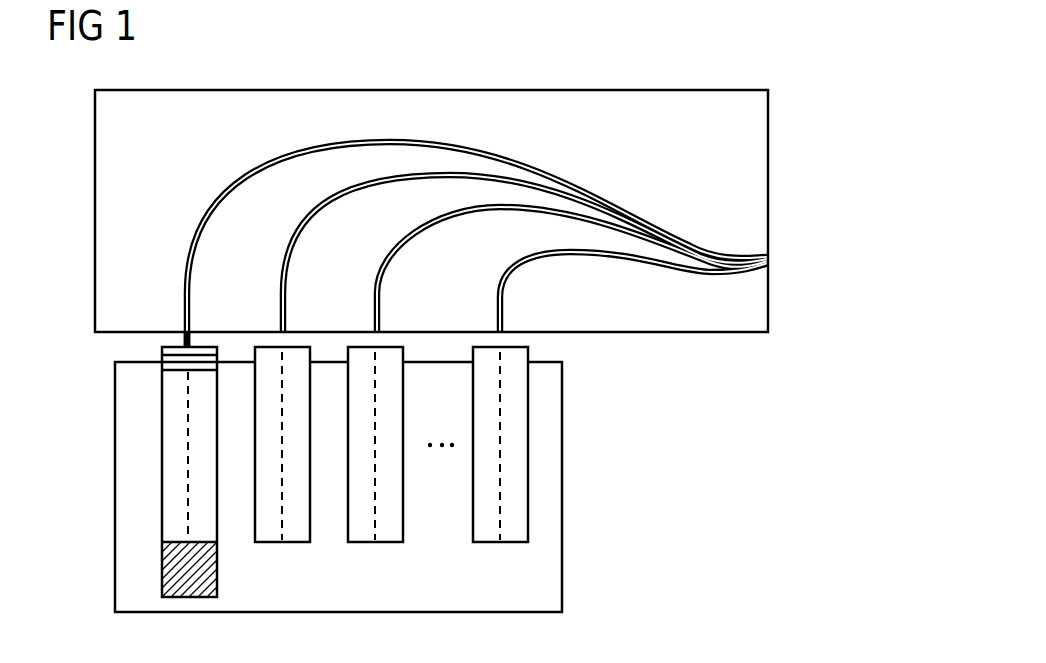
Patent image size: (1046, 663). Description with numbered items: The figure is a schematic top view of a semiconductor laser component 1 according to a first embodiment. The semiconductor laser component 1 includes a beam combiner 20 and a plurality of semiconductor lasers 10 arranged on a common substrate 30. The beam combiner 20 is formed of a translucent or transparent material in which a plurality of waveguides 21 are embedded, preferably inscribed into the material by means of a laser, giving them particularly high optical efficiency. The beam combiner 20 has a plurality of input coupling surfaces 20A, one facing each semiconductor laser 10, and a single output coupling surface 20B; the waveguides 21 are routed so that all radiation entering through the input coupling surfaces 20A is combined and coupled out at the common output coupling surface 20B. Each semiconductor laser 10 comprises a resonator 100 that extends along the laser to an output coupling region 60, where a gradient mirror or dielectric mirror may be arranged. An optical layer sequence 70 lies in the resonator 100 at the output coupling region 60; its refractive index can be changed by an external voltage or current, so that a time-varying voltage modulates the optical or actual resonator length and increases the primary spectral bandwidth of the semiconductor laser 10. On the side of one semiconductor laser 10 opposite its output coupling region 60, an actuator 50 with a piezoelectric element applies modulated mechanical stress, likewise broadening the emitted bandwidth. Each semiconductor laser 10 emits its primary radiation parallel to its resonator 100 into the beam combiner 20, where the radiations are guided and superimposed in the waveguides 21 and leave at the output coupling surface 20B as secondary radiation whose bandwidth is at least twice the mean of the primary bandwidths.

The semiconductor laser component 1 is at (765, 70).
The semiconductor laser 10 is at (173, 512).
The beam combiner 20 is at (755, 168).
The input coupling surface 20A is at (205, 315).
The output coupling surface 20B is at (785, 257).
The waveguide 21 is at (298, 247).
The common substrate 30 is at (547, 577).
The actuator 50 is at (170, 568).
The output coupling region 60 is at (172, 335).
The optical layer sequence 70 is at (160, 345).
The resonator 100 is at (280, 447).